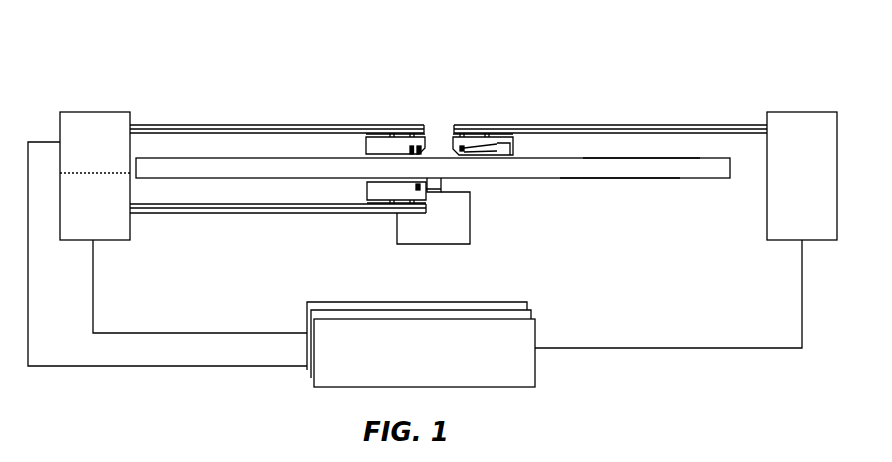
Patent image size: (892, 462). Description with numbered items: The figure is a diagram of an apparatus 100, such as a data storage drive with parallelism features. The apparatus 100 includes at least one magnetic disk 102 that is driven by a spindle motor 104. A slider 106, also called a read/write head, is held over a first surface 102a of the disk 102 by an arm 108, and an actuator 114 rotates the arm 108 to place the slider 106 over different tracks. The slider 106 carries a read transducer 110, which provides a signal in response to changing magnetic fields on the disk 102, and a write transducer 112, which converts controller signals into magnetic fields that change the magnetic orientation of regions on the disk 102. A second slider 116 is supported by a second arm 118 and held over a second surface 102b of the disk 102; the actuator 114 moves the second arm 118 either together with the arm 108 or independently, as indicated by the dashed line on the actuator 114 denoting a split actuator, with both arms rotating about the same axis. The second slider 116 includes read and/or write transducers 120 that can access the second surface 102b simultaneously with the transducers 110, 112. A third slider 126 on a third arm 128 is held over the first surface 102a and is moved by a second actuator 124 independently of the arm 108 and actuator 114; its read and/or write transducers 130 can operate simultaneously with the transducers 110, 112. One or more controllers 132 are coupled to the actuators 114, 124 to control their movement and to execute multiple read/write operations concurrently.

The apparatus 100 is at (566, 71).
The magnetic disk 102 is at (693, 170).
The first surface 102a is at (596, 157).
The second surface 102b is at (622, 178).
The spindle motor 104 is at (413, 247).
The slider 106 is at (380, 143).
The arm 108 is at (257, 125).
The read transducer 110 is at (419, 146).
The write transducer 112 is at (413, 146).
The actuator 114 is at (87, 115).
The second slider 116 is at (377, 195).
The second arm 118 is at (245, 213).
The read and/or write transducers 120 is at (448, 186).
The second actuator 124 is at (793, 112).
The third slider 126 is at (483, 143).
The third arm 128 is at (621, 125).
The read and/or write transducers 130 is at (495, 145).
The controllers 132 is at (495, 312).